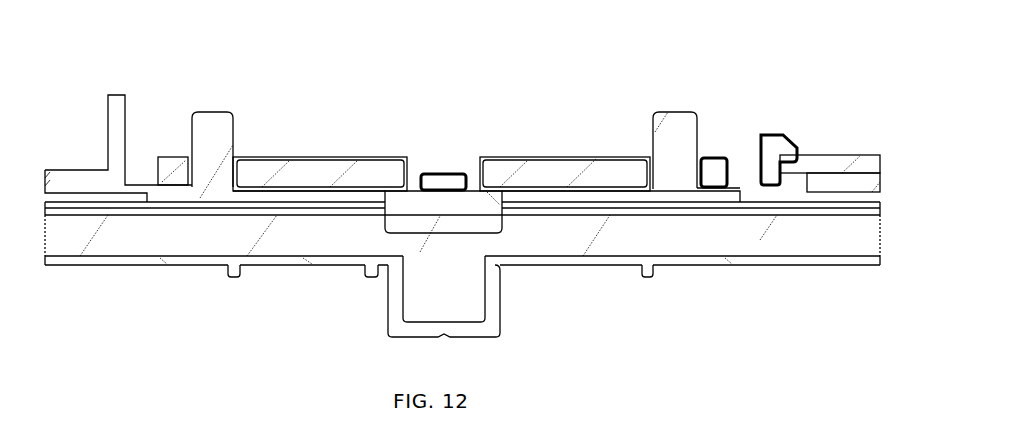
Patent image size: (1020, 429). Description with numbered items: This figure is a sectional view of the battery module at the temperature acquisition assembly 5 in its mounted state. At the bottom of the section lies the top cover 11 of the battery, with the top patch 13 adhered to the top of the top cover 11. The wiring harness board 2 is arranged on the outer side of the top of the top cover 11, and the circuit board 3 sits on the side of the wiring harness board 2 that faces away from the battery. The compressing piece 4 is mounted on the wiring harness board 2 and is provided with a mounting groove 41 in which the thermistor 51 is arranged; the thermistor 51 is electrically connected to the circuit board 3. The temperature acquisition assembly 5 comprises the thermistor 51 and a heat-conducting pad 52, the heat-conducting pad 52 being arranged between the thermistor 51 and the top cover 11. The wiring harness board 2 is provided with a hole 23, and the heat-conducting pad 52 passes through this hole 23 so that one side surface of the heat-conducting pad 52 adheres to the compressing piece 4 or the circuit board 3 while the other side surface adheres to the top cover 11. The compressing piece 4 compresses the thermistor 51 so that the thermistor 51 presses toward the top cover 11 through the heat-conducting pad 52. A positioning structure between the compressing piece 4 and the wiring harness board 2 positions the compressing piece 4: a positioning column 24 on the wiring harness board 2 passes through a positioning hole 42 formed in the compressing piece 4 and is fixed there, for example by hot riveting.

The wiring harness board 2 is at (123, 131).
The positioning column 24 is at (200, 142).
The compressing piece 4 is at (333, 178).
The mounting groove 41 is at (470, 173).
The temperature acquisition assembly 5 is at (500, 56).
The heat-conducting pad 52 is at (428, 174).
The thermistor 51 is at (418, 207).
The hole 23 is at (380, 193).
The circuit board 3 is at (554, 189).
The positioning hole 42 is at (702, 156).
The top patch 13 is at (642, 214).
The top cover 11 is at (572, 237).